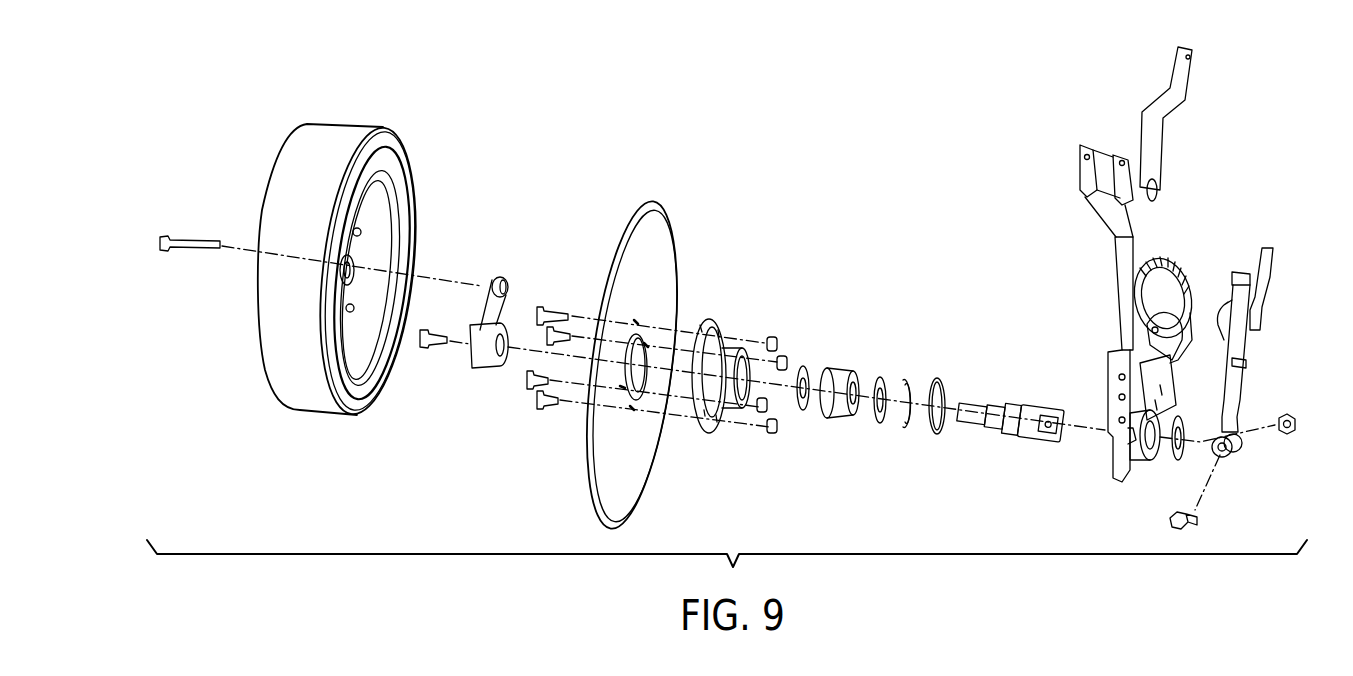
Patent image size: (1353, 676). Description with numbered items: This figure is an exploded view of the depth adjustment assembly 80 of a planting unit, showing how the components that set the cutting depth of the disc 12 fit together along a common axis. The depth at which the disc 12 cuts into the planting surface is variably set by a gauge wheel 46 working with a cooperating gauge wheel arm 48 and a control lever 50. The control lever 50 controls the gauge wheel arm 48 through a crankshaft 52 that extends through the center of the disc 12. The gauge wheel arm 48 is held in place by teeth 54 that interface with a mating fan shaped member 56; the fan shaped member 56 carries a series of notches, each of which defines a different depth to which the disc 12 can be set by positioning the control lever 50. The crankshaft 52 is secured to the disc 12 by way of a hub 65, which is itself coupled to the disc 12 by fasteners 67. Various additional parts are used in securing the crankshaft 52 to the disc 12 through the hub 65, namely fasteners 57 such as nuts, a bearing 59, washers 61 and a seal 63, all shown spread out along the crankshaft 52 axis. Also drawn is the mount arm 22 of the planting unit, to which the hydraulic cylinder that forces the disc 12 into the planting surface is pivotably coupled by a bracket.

The wheel assembly 80 is at (200, 107).
The gauge wheel 46 is at (338, 120).
The gauge wheel arm 48 is at (473, 373).
The disc 12 is at (655, 200).
The fasteners 67 is at (553, 305).
The hub 65 is at (718, 322).
The fasteners 57 is at (775, 336).
The bearing 59 is at (838, 415).
The washers 61 is at (803, 370).
The seal 63 is at (940, 380).
The crankshaft 52 is at (1030, 437).
The mount arm 22 is at (1155, 130).
The fan shaped member 56 is at (1182, 270).
The teeth 54 is at (1232, 283).
The control lever 50 is at (1265, 282).